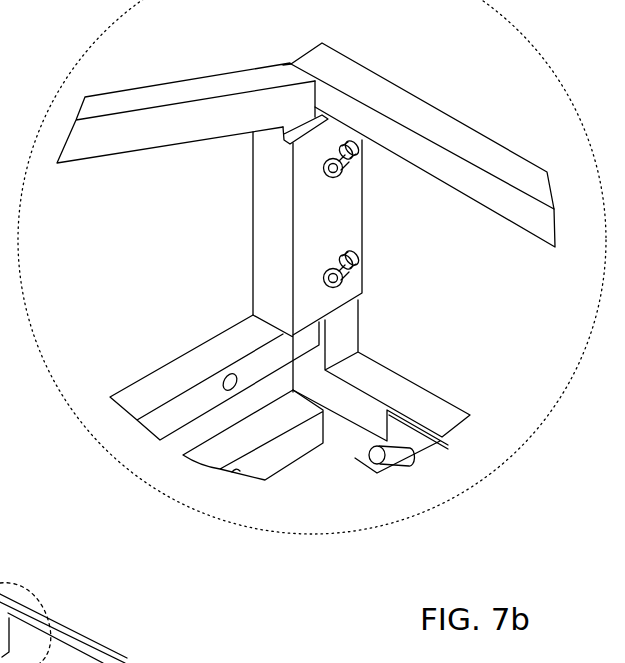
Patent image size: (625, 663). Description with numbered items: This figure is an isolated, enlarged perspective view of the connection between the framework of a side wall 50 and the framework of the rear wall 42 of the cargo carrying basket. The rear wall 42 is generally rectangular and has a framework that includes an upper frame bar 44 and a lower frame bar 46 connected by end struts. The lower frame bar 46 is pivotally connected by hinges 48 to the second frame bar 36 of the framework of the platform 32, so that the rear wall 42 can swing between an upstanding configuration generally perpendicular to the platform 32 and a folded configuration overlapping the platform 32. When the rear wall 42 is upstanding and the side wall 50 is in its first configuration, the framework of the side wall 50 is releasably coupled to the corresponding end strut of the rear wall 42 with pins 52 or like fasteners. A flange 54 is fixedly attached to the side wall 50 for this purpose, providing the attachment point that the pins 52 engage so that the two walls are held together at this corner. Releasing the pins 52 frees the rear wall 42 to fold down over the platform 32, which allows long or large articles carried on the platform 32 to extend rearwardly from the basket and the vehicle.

The platform 32 is at (290, 488).
The second frame bar 36 is at (352, 453).
The rear wall 42 is at (469, 101).
The upper frame bar 44 is at (376, 72).
The lower frame bar 46 is at (427, 390).
The hinges 48 is at (421, 443).
The side wall 50 is at (161, 86).
The pins 52 is at (345, 172).
The flange 54 is at (362, 217).